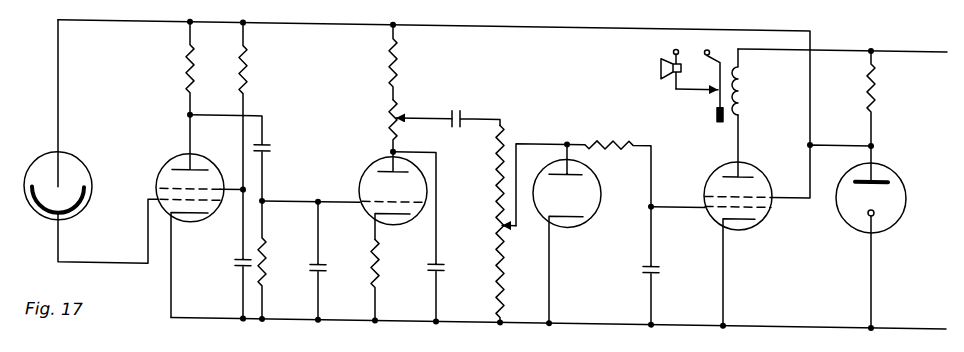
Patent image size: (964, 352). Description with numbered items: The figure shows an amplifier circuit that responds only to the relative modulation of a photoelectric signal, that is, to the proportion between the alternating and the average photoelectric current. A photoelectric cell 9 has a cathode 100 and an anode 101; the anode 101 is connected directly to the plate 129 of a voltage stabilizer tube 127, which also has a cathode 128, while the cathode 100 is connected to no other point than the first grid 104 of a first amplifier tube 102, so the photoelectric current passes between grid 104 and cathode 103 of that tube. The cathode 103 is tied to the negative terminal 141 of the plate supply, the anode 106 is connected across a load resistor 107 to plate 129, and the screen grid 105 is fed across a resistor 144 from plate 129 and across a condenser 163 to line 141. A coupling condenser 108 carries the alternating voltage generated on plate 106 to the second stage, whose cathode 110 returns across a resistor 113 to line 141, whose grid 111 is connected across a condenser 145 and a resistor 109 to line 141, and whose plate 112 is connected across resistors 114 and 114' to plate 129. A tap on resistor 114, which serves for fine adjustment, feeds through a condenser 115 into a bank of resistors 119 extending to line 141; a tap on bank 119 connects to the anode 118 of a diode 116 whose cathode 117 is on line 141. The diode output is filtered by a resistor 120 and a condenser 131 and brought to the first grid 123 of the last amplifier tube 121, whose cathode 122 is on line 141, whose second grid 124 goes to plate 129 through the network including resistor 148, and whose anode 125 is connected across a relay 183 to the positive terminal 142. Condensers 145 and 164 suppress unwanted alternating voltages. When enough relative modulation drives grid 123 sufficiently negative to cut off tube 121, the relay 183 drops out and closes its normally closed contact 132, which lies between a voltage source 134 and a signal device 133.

The photoelectric cell 9 is at (88, 204).
The cathode of photoelectric cell 100 is at (62, 222).
The anode of photoelectric cell 101 is at (60, 158).
The first amplifier tube 102 is at (161, 166).
The cathode of first amplifier tube 103 is at (171, 222).
The first grid 104 is at (158, 188).
The screen grid 105 is at (222, 173).
The anode of first amplifier tube 106 is at (188, 156).
The load resistor 107 is at (190, 69).
The coupling capacitor 108 is at (270, 147).
The resistor 109 is at (262, 250).
The cathode of second amplifier tube 110 is at (376, 209).
The grid of second amplifier tube 111 is at (367, 193).
The anode of second amplifier tube 112 is at (392, 149).
The resistor 113 is at (374, 250).
The resistor 114 is at (398, 126).
The resistor 114' is at (371, 62).
The condenser 115 is at (460, 90).
The diode 116 is at (597, 203).
The cathode of diode 117 is at (551, 220).
The anode of diode 118 is at (582, 161).
The bank of resistors 119 is at (487, 143).
The resistor 120 is at (619, 138).
The last amplifier tube 121 is at (714, 158).
The cathode of last amplifier tube 122 is at (720, 218).
The first grid of last amplifier tube 123 is at (704, 187).
The second grid of last amplifier tube 124 is at (766, 188).
The anode of last amplifier tube 125 is at (741, 162).
The voltage stabilizer tube 127 is at (905, 197).
The cathode of voltage stabilizer tube 128 is at (873, 217).
The anode of voltage stabilizer tube 129 is at (880, 168).
The condenser 131 is at (654, 258).
The normally closed contact 132 is at (708, 79).
The signal device 133 is at (661, 69).
The voltage source 134 is at (686, 53).
The negative terminal 141 is at (886, 319).
The positive terminal 142 is at (890, 46).
The resistor 144 is at (244, 74).
The condenser 145 is at (318, 270).
The resistor 148 is at (875, 94).
The condenser 163 is at (242, 265).
The condenser 164 is at (436, 271).
The relay 183 is at (740, 83).